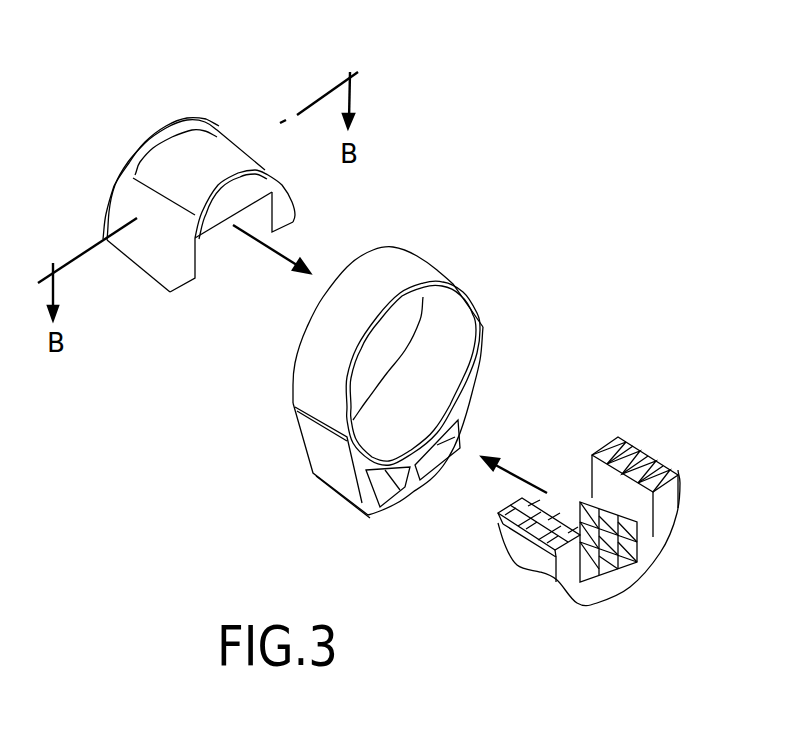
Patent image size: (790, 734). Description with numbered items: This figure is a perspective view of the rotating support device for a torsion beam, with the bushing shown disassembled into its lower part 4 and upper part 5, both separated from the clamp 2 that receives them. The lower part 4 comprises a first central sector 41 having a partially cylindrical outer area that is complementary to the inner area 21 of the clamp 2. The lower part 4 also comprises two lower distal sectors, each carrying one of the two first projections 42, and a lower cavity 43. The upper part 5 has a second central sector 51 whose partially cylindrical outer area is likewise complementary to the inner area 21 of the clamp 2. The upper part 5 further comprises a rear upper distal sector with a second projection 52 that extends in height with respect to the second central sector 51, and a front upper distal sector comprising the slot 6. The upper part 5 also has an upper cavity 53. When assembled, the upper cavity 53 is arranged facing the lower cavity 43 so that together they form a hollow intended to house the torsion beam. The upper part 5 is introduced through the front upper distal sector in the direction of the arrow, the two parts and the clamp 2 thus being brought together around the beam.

The clamp 2 is at (403, 270).
The inner area 21 is at (437, 353).
The lower part 4 is at (644, 583).
The first central sector 41 is at (541, 572).
The first projections 42 is at (510, 557).
The lower cavity 43 is at (562, 507).
The upper part 5 is at (136, 142).
The second central sector 51 is at (141, 257).
The second projection 52 is at (212, 133).
The upper cavity 53 is at (222, 232).
The slot 6 is at (237, 177).